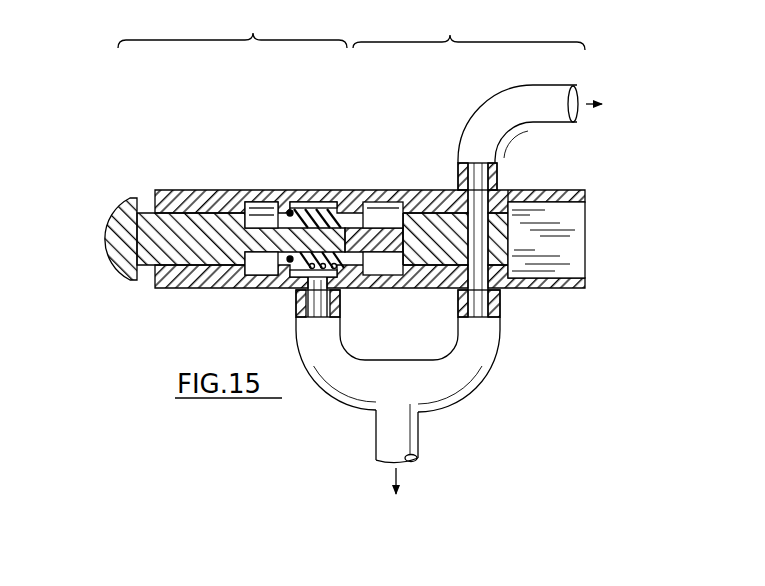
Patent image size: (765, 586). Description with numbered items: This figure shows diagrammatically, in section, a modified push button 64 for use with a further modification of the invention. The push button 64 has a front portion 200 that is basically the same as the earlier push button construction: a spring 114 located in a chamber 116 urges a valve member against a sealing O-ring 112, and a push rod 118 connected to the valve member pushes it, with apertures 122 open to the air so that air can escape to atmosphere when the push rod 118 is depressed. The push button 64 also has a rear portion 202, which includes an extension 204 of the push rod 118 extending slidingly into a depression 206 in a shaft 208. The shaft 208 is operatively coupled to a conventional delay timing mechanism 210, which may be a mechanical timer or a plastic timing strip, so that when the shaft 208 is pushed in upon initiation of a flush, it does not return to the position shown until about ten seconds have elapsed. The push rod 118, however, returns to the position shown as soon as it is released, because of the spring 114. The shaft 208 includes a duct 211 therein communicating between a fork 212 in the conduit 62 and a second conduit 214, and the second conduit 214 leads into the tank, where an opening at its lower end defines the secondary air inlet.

The front portion 200 is at (293, 147).
The rear portion 202 is at (469, 148).
The second conduit 214 is at (520, 92).
The push button 64 is at (221, 171).
The apertures 122 is at (262, 200).
The chamber 116 is at (328, 200).
The spring 114 is at (294, 208).
The depression 206 is at (366, 235).
The duct 211 is at (497, 201).
The push rod 118 is at (111, 225).
The delay timing mechanism 210 is at (585, 214).
The sealing O-ring 112 is at (288, 274).
The extension 204 is at (359, 270).
The shaft 208 is at (432, 250).
The fork 212 is at (500, 330).
The conduit 62 is at (419, 434).